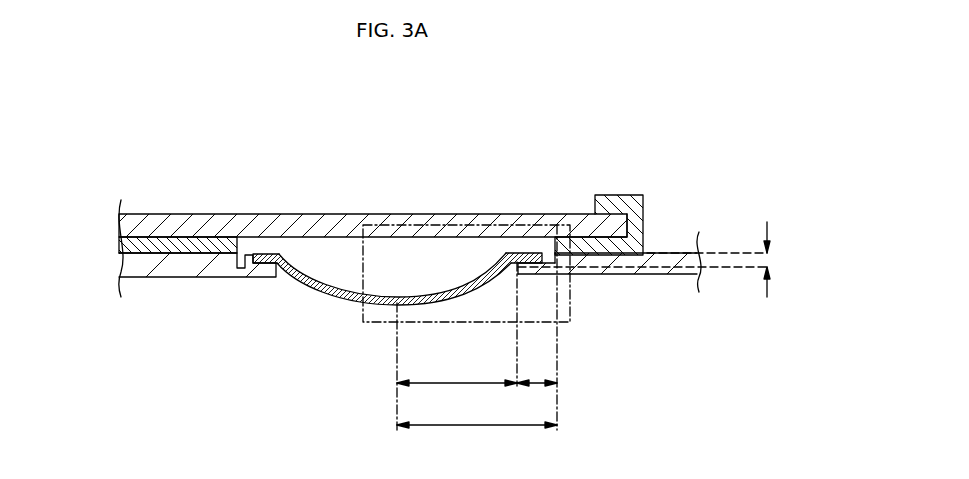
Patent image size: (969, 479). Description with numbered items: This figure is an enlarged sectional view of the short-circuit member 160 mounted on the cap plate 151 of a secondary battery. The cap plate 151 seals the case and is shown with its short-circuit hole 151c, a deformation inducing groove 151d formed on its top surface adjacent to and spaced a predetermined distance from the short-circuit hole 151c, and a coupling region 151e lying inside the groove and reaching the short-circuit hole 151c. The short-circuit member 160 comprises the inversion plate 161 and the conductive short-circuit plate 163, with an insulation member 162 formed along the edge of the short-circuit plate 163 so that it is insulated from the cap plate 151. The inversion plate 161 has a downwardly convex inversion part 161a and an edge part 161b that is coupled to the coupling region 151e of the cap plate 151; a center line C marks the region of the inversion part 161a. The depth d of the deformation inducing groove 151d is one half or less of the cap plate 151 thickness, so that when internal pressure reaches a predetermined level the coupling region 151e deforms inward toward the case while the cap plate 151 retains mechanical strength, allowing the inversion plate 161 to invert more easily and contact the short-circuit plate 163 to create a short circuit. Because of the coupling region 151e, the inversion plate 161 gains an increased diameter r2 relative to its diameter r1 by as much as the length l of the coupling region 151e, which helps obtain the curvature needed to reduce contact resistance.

The short-circuit member 160 is at (572, 138).
The insulation member 162 is at (187, 243).
The short-circuit plate 163 is at (307, 222).
The cap plate 151 is at (397, 258).
The short-circuit hole 151c is at (502, 263).
The deformation inducing groove 151d is at (548, 267).
The coupling region 151e is at (522, 277).
The inversion plate 161 is at (395, 256).
The inversion part 161a is at (338, 300).
The edge part 161b is at (519, 253).
The center region C is at (402, 223).
The diameter r1 is at (457, 372).
The increased diameter r2 is at (477, 415).
The length of the coupling region l is at (537, 372).
The depth of the deformation inducing groove d is at (654, 259).